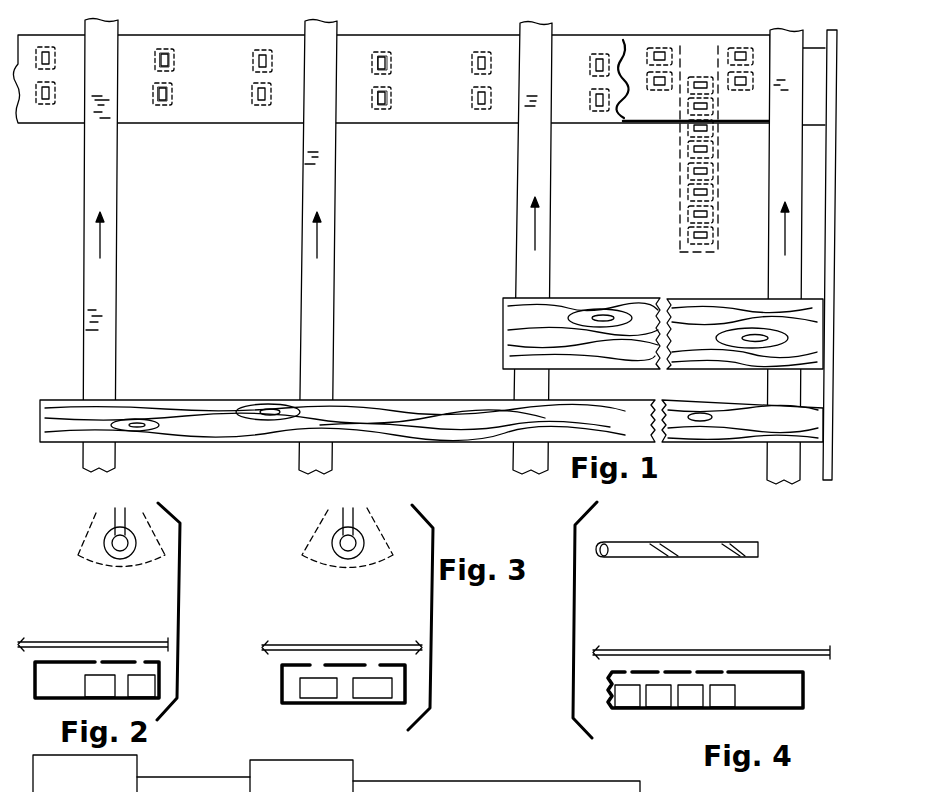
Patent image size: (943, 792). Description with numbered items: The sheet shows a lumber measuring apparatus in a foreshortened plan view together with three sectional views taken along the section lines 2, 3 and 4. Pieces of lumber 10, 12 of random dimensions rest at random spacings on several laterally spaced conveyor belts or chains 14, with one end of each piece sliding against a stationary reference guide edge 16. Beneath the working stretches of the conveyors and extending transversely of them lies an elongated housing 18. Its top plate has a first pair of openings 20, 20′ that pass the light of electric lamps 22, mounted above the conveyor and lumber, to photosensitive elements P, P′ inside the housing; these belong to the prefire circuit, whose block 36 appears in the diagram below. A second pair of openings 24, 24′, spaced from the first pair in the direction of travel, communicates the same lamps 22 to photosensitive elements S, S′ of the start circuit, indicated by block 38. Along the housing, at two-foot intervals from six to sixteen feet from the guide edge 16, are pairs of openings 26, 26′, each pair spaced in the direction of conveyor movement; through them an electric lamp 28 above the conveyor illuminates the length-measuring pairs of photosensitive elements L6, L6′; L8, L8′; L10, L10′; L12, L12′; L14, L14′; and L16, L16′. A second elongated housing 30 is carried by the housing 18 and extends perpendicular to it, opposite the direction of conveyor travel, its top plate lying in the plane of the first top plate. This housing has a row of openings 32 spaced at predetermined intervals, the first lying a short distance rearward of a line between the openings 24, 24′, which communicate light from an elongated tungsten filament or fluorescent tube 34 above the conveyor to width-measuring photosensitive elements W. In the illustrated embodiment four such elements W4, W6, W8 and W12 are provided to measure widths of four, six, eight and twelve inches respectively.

In FIG. 1, the piece of lumber 10 is at (503, 333).
In FIG. 1, the piece of lumber 12 is at (452, 444).
In FIG. 1, the conveyor belts or chains 14 is at (443, 252).
In FIG. 2, the conveyor belts or chains 14 is at (38, 648).
In FIG. 3, the conveyor belts or chains 14 is at (287, 651).
In FIG. 4, the conveyor belts or chains 14 is at (627, 650).
In FIG. 1, the stationary reference guide edge 16 is at (824, 470).
In FIG. 1, the elongated housing 18 is at (419, 80).
In FIG. 2, the elongated housing 18 is at (64, 698).
In FIG. 3, the elongated housing 18 is at (282, 692).
In FIG. 1, the opening 20 is at (660, 83).
In FIG. 2, the opening 20 is at (100, 660).
In FIG. 1, the opening 20′ is at (748, 83).
In FIG. 2, the electric lamp 22 is at (112, 543).
In FIG. 1, the opening 24 is at (683, 50).
In FIG. 2, the opening 24 is at (145, 660).
In FIG. 1, the opening 24′ is at (740, 50).
In FIG. 1, the opening 26 is at (165, 96).
In FIG. 3, the opening 26 is at (315, 665).
In FIG. 1, the opening 26′ is at (170, 60).
In FIG. 3, the opening 26′ is at (376, 665).
In FIG. 3, the electric lamp 28 is at (340, 543).
In FIG. 1, the second elongated housing 30 is at (684, 243).
In FIG. 4, the second elongated housing 30 is at (773, 708).
In FIG. 1, the openings 32 is at (686, 216).
In FIG. 4, the openings 32 is at (692, 670).
In FIG. 4, the elongated tungsten filament or fluorescent tube 34 is at (665, 547).
In FIG. 2, the prefire block 36 is at (140, 775).
In FIG. 3, the start block 38 is at (357, 780).
In FIG. 1, the section line 2— 2 is at (658, 47).
In FIG. 1, the section line 3— 3 is at (151, 21).
In FIG. 1, the section line 4— 4 is at (702, 47).
In FIG. 1, the photosensitive element P is at (650, 90).
In FIG. 2, the photosensitive element P is at (100, 686).
In FIG. 1, the photosensitive element P′ is at (748, 92).
In FIG. 1, the photosensitive element S is at (650, 62).
In FIG. 2, the photosensitive element S is at (141, 686).
In FIG. 1, the photosensitive element S′ is at (744, 50).
In FIG. 1, the photosensitive elements W is at (716, 205).
In FIG. 1, the width measuring photosensitive element W4 is at (713, 95).
In FIG. 4, the width measuring photosensitive element W4 is at (722, 702).
In FIG. 4, the width measuring photosensitive element W6 is at (690, 702).
In FIG. 1, the width measuring photosensitive element W8 is at (713, 117).
In FIG. 4, the width measuring photosensitive element W8 is at (660, 702).
In FIG. 1, the width measuring photosensitive element W12 is at (713, 141).
In FIG. 1, the photosensitive element L6 is at (596, 112).
In FIG. 1, the photosensitive element L6′ is at (592, 62).
In FIG. 1, the photosensitive element L8 is at (485, 110).
In FIG. 1, the photosensitive element L8′ is at (480, 56).
In FIG. 1, the photosensitive element L10 is at (375, 110).
In FIG. 1, the photosensitive element L10′ is at (373, 62).
In FIG. 1, the photosensitive element L12 is at (259, 106).
In FIG. 1, the photosensitive element L12′ is at (260, 52).
In FIG. 1, the photosensitive element L14 is at (172, 100).
In FIG. 3, the photosensitive element L14 is at (318, 688).
In FIG. 1, the photosensitive element L14′ is at (176, 62).
In FIG. 3, the photosensitive element L14′ is at (372, 688).
In FIG. 1, the photosensitive element L16 is at (47, 108).
In FIG. 1, the photosensitive element L16′ is at (44, 48).